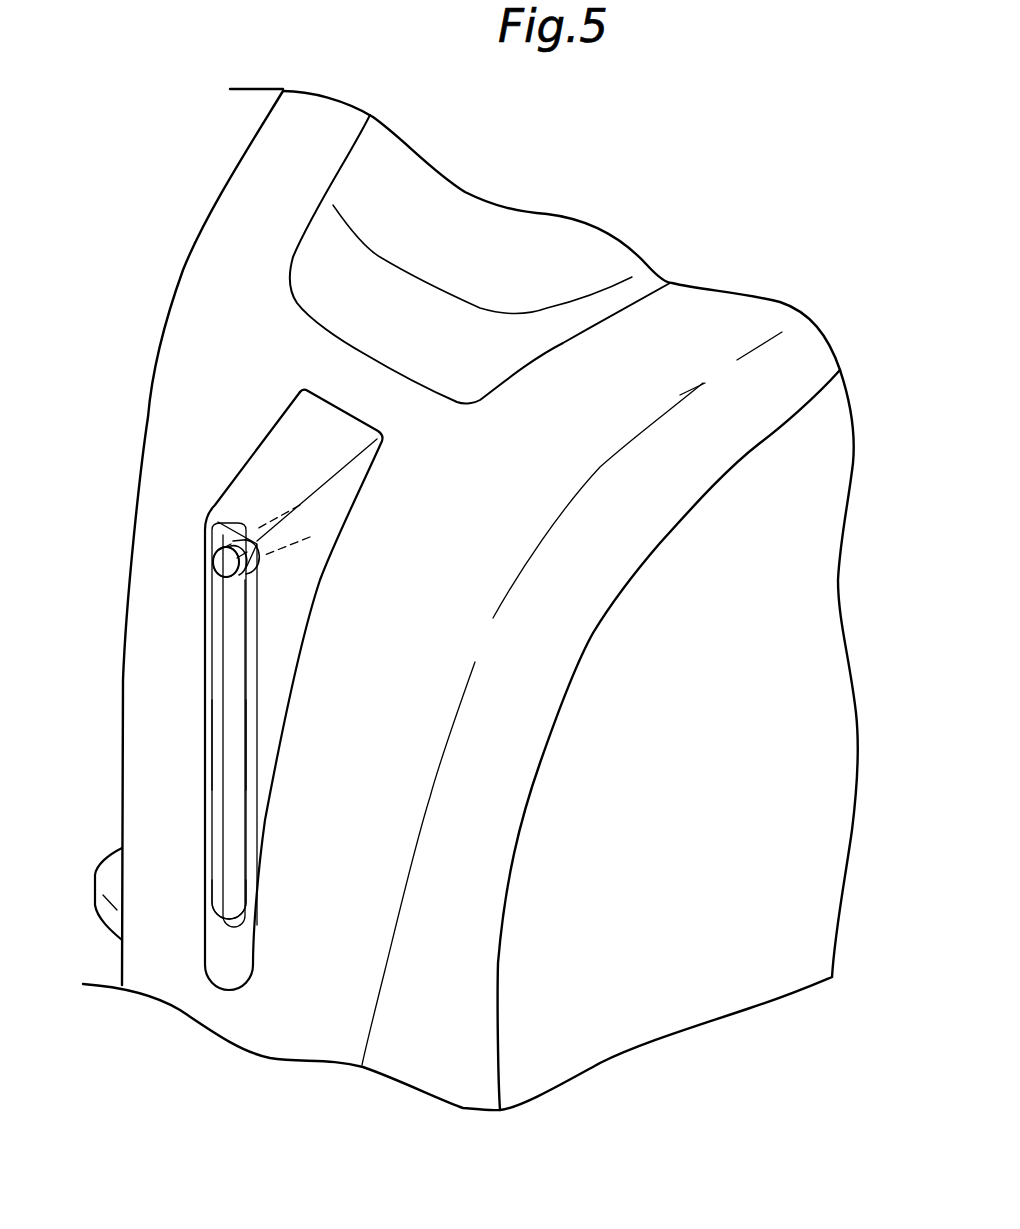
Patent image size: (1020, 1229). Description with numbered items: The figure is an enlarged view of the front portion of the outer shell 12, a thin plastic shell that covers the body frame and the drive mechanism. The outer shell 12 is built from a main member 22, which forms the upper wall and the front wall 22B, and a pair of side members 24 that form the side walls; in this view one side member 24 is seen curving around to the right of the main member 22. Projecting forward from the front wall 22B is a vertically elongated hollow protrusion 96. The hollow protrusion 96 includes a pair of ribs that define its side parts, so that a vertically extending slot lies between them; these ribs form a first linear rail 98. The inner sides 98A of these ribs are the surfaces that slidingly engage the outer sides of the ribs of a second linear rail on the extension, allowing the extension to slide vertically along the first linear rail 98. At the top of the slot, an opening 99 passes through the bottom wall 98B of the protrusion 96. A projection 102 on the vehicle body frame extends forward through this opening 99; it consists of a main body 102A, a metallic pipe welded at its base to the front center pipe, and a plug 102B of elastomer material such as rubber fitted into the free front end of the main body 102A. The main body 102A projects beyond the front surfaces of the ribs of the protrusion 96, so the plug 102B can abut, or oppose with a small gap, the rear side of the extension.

The outer shell 12 is at (656, 247).
The main member 22 is at (188, 371).
The front wall 22B is at (138, 784).
The side member 24 is at (807, 580).
The hollow protrusion 96 is at (285, 633).
The first linear rail 98 is at (209, 695).
The inner sides of the ribs 98A is at (223, 747).
The bottom wall 98B is at (233, 833).
The opening 99 is at (224, 549).
The projection 102 is at (211, 559).
The main body 102A is at (246, 574).
The plug 102B is at (226, 562).